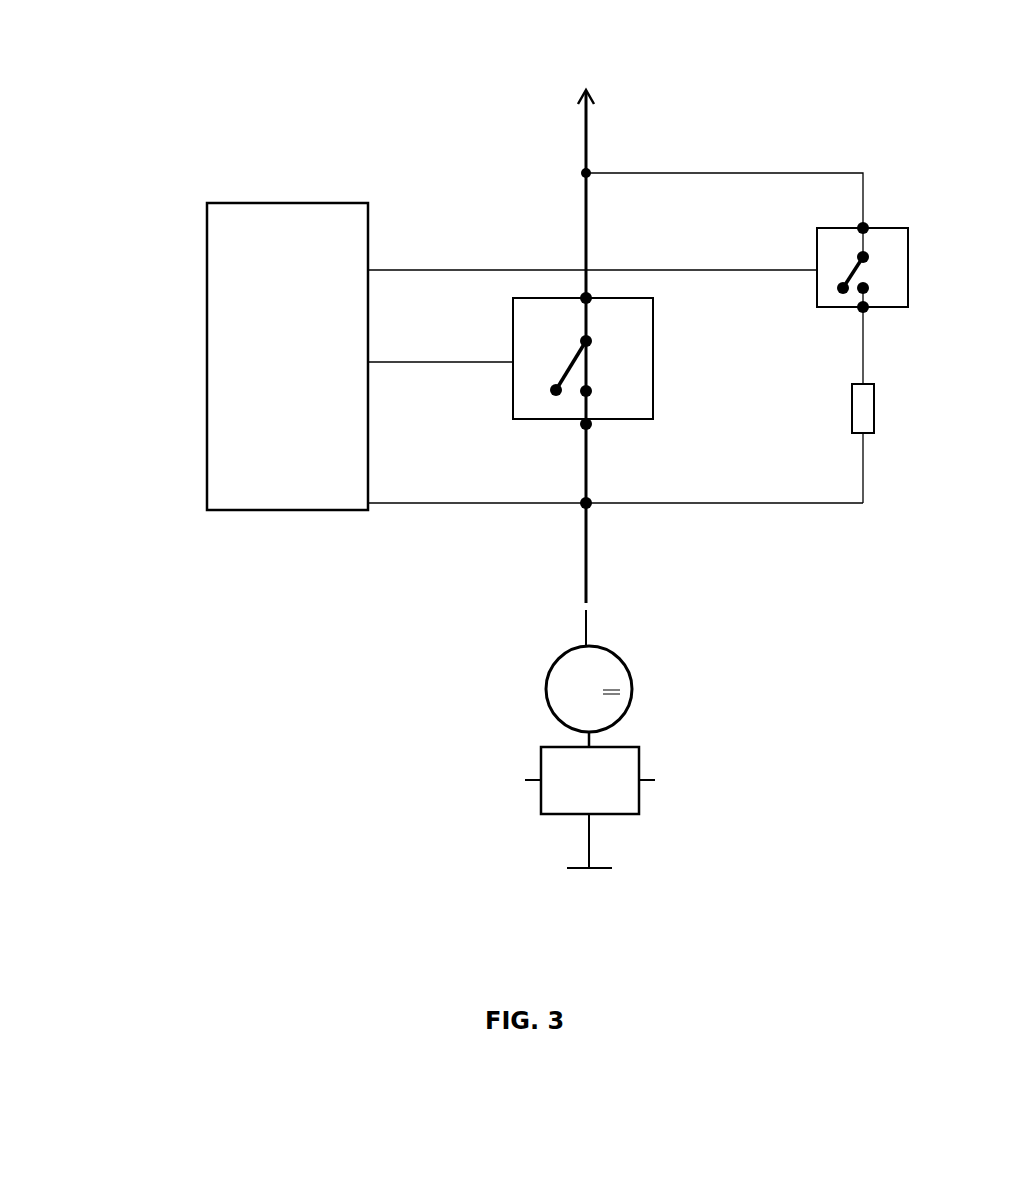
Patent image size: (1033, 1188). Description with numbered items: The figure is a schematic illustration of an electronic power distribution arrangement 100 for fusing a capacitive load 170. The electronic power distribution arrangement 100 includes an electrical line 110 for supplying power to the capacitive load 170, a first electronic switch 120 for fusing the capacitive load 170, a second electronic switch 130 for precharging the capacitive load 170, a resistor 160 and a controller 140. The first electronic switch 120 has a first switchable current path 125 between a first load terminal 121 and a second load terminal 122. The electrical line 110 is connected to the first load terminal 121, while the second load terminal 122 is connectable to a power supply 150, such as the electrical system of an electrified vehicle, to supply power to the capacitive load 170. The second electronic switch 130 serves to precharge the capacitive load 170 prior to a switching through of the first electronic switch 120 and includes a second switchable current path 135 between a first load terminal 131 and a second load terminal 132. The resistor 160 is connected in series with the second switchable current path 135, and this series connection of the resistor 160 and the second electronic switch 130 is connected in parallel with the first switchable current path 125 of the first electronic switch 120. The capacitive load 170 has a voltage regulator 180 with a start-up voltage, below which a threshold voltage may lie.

The electronic power distribution arrangement 100 is at (96, 126).
The electrical line 110 is at (592, 576).
The first electronic switch 120 is at (538, 292).
The first load terminal 121 is at (580, 436).
The second load terminal 122 is at (594, 292).
The first switchable current path 125 is at (594, 402).
The second electronic switch 130 is at (834, 226).
The first load terminal 131 is at (858, 314).
The second load terminal 132 is at (870, 224).
The second switchable current path 135 is at (876, 296).
The controller 140 is at (286, 198).
The power supply 150 is at (601, 99).
The resistor 160 is at (880, 406).
The capacitive load 170 is at (634, 668).
The voltage regulator 180 is at (524, 804).